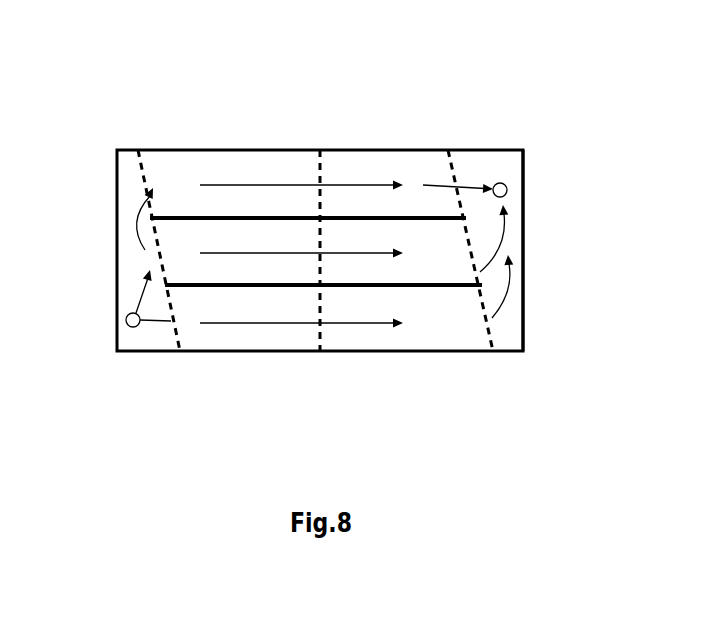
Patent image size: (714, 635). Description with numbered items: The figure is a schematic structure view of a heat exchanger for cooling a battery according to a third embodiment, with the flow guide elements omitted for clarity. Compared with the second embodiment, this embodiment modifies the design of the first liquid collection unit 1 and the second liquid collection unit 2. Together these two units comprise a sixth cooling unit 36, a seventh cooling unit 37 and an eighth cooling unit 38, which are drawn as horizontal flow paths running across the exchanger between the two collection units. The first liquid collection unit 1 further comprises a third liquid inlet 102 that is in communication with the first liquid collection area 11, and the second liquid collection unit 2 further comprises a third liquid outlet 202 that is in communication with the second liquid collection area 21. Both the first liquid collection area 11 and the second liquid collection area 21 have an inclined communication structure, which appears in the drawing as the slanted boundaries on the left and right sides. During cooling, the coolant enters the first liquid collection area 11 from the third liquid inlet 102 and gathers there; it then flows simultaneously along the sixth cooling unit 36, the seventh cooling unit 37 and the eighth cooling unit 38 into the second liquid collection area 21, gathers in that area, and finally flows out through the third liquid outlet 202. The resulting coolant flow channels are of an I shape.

The first liquid collection unit 1 is at (117, 158).
The second liquid collection unit 2 is at (527, 162).
The first liquid collection area 11 is at (147, 335).
The second liquid collection area 21 is at (483, 168).
The sixth cooling unit 36 is at (265, 338).
The seventh cooling unit 37 is at (200, 237).
The eighth cooling unit 38 is at (272, 168).
The third liquid inlet 102 is at (126, 321).
The third liquid outlet 202 is at (506, 196).